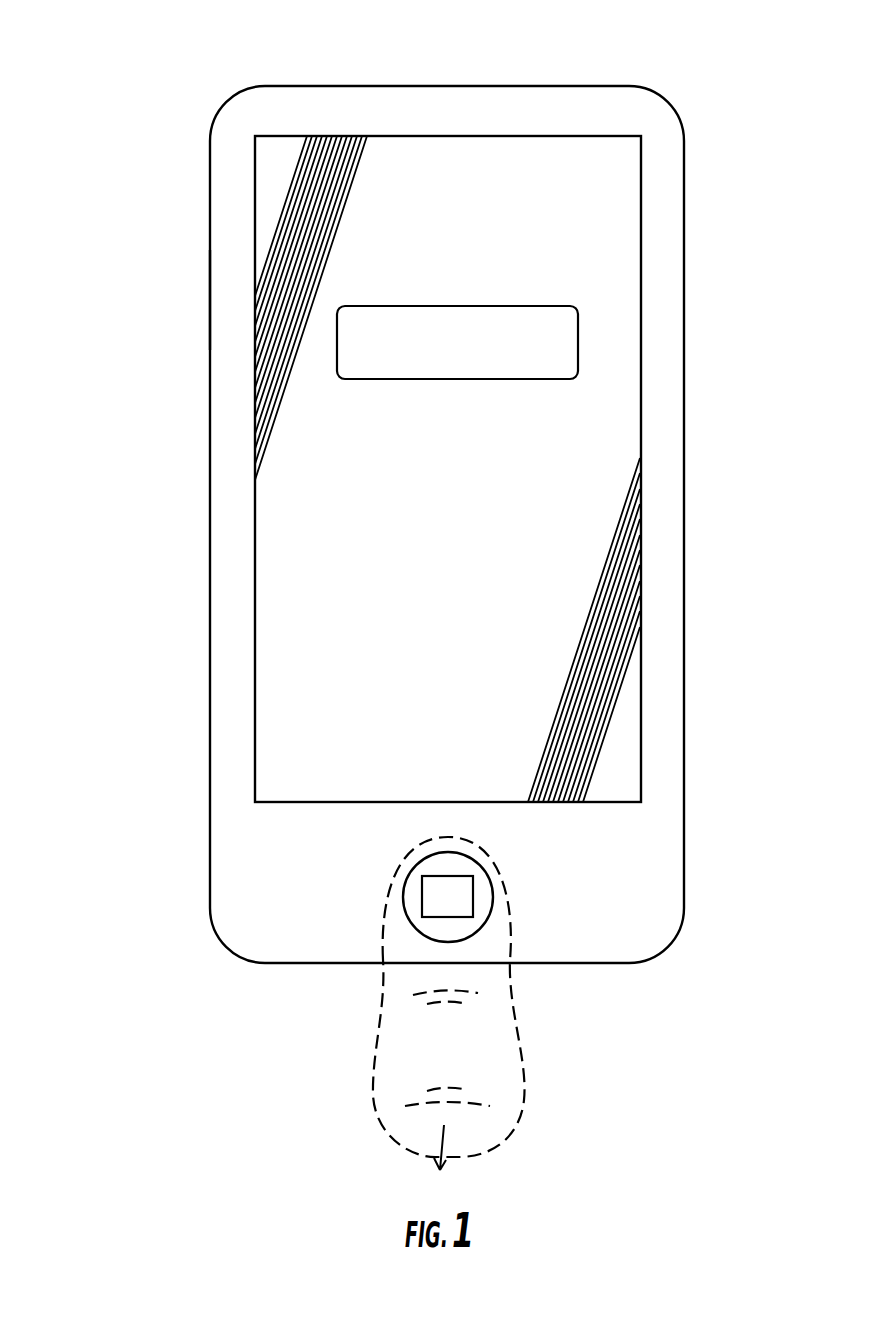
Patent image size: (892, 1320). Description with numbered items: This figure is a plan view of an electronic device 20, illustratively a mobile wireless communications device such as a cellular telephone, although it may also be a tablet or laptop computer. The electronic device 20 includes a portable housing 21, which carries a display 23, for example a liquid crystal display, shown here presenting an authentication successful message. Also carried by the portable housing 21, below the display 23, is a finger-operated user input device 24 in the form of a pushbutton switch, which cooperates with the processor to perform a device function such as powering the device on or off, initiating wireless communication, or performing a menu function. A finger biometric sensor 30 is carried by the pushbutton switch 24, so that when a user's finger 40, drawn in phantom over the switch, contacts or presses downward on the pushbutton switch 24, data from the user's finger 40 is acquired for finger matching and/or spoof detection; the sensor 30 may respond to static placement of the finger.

The electronic device 20 is at (140, 84).
The portable housing 21 is at (210, 302).
The display 23 is at (255, 298).
The finger-operated user input device 24 is at (414, 929).
The finger biometric sensor 30 is at (430, 918).
The user's finger 40 is at (383, 991).